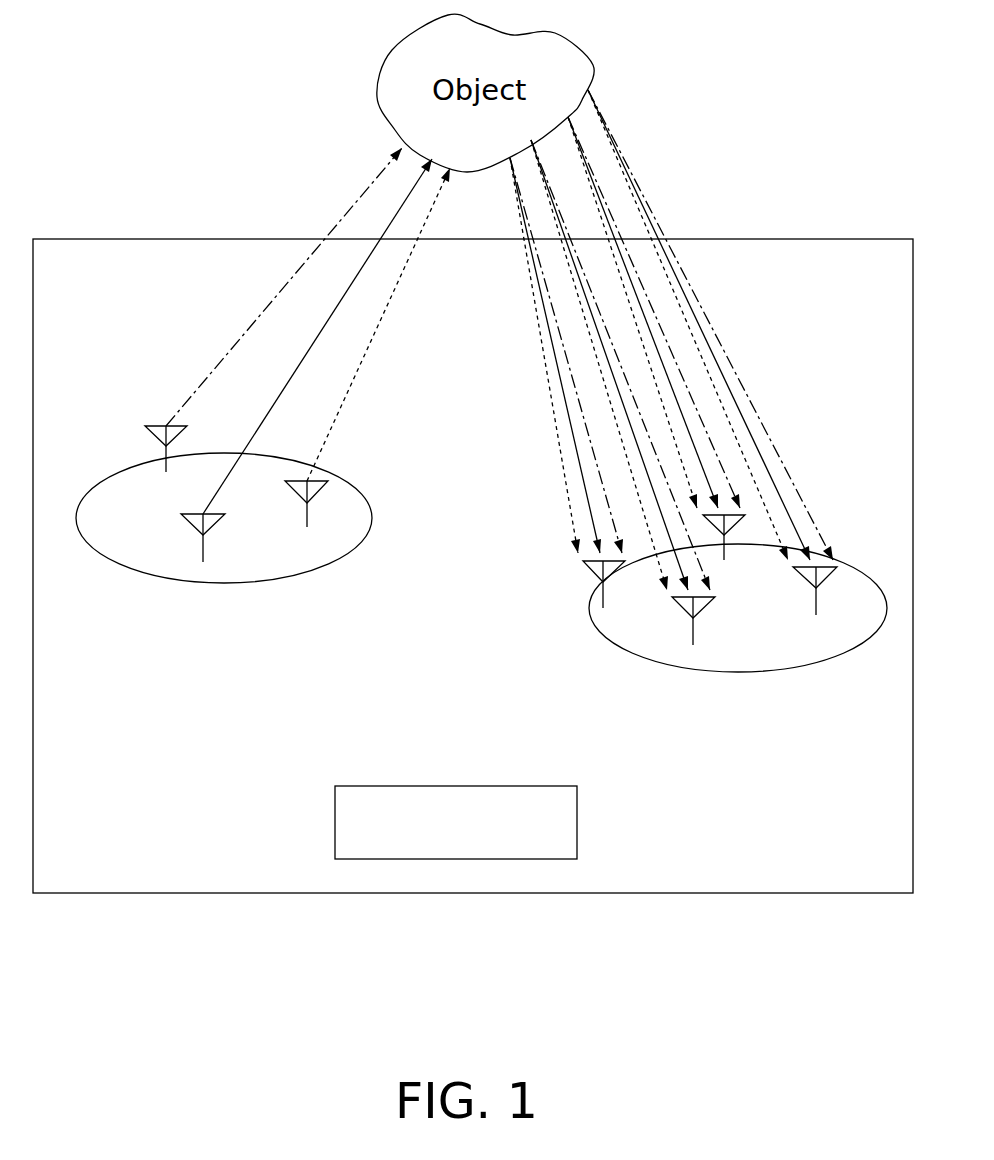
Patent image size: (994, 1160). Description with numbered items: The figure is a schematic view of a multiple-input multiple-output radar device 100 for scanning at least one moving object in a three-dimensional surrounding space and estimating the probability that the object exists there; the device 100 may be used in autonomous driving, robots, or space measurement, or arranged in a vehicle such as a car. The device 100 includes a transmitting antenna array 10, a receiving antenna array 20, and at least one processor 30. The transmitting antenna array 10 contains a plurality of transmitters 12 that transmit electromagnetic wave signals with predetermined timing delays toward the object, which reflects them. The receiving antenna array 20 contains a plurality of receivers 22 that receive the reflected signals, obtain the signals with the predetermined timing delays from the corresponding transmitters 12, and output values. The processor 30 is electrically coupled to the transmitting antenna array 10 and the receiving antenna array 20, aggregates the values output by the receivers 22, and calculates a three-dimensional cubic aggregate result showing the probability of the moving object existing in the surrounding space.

The multiple-input multiple-output (MIMO) radar device 100 is at (190, 239).
The transmitting antenna array 10 is at (214, 552).
The transmitter 12 is at (145, 428).
The receiving antenna array 20 is at (678, 632).
The receiver 22 is at (590, 575).
The processor 30 is at (578, 822).